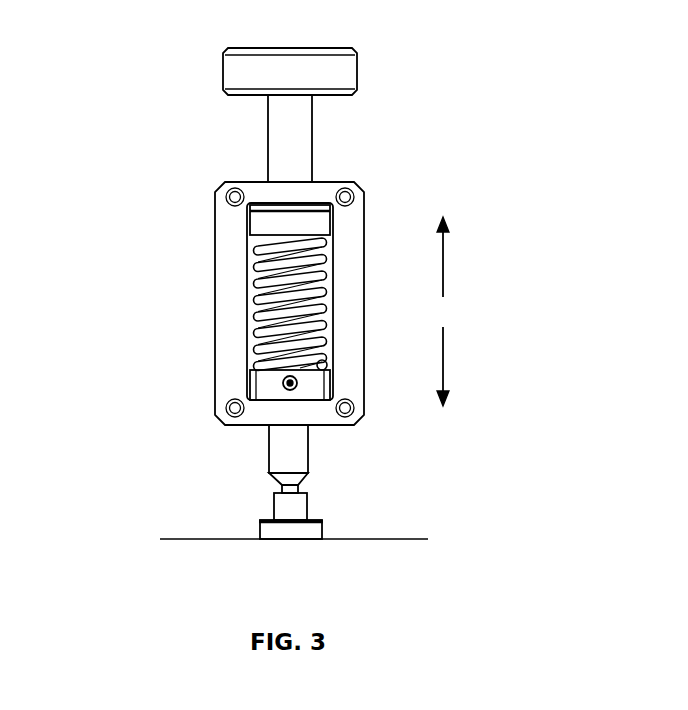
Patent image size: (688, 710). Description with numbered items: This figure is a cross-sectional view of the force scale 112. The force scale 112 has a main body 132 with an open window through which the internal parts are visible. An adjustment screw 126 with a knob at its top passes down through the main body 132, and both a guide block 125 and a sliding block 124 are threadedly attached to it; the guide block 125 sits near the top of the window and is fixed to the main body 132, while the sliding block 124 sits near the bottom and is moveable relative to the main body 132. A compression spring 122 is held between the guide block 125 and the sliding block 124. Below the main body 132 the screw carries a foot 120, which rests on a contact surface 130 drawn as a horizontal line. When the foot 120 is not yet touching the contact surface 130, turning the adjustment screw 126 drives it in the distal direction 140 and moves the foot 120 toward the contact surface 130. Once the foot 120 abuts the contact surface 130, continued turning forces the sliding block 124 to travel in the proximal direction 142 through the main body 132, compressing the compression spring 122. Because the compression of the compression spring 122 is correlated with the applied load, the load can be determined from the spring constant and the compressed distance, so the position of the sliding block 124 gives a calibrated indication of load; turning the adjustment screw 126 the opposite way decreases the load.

The force scale 112 is at (126, 120).
The foot 120 is at (322, 532).
The compression spring 122 is at (250, 305).
The sliding block 124 is at (280, 386).
The guide block 125 is at (318, 203).
The adjustment screw 126 is at (358, 72).
The contact surface 130 is at (256, 545).
The main body 132 is at (228, 217).
The distal direction 140 is at (443, 365).
The proximal direction 142 is at (443, 257).